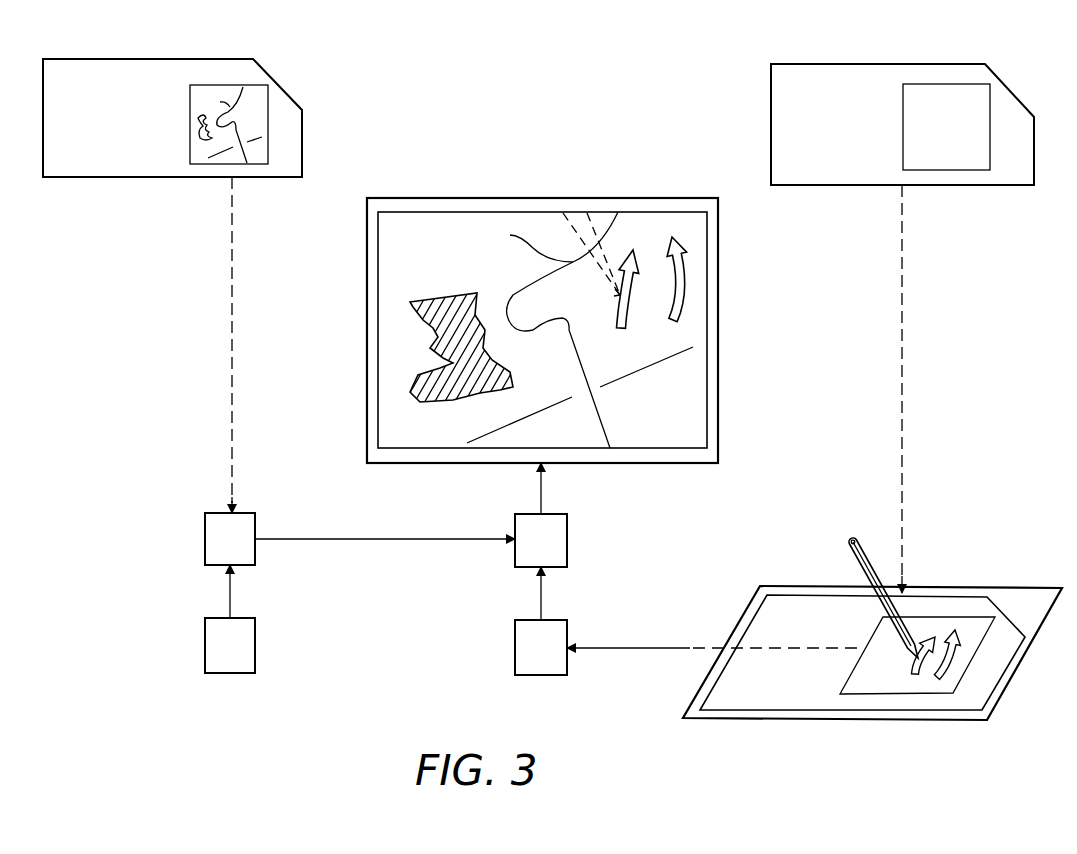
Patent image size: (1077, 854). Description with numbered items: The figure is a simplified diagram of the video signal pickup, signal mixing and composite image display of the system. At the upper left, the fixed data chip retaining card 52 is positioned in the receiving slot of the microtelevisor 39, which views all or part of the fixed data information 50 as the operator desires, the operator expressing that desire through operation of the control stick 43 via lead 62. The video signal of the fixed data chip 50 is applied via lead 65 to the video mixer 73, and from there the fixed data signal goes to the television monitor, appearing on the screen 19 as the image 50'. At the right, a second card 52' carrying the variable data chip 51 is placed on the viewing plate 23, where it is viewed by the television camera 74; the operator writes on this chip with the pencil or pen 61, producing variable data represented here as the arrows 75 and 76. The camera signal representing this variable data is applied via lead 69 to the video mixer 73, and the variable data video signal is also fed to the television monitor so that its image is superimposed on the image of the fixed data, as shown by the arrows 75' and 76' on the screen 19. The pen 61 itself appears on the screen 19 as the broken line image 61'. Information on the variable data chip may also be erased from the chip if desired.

The fixed data chip retaining card 52 is at (172, 101).
The fixed data information 50 is at (249, 106).
The card retaining the variable data chip 52' is at (867, 370).
The variable data chip 51 is at (990, 103).
The screen 19 is at (502, 198).
The image of the fixed data 50' is at (526, 309).
The broken line image of the pen 61' is at (598, 233).
The superimposed arrow image 75' is at (713, 279).
The superimposed arrow image 76' is at (689, 297).
The microtelevisor 39 is at (241, 548).
The control stick 43 is at (241, 654).
The video mixer 73 is at (552, 549).
The television camera 74 is at (552, 656).
The lead 65 is at (362, 538).
The lead 62 is at (230, 597).
The lead 69 is at (541, 597).
The viewing plate 23 is at (952, 585).
The pencil or pen 61 is at (865, 598).
The arrow 75 is at (990, 654).
The arrow 76 is at (925, 690).